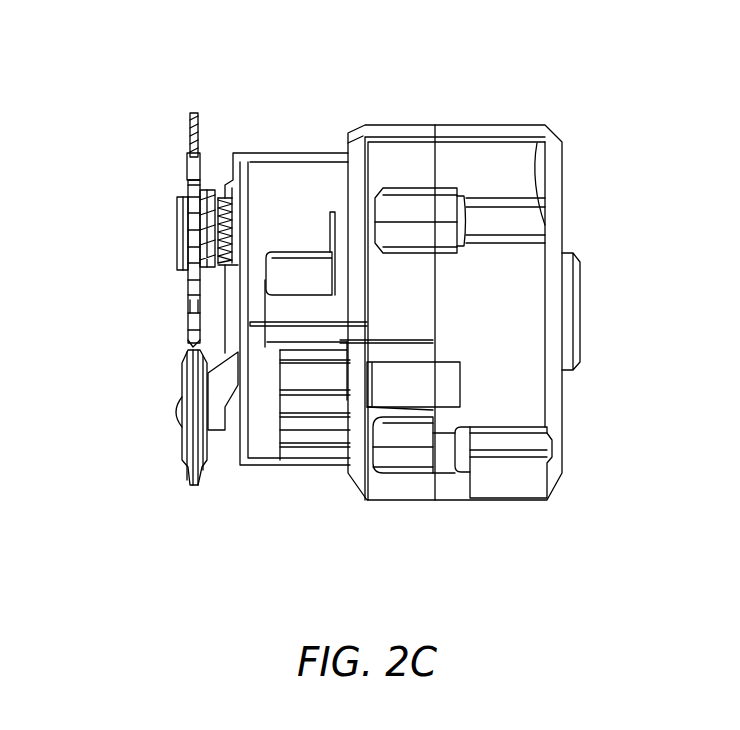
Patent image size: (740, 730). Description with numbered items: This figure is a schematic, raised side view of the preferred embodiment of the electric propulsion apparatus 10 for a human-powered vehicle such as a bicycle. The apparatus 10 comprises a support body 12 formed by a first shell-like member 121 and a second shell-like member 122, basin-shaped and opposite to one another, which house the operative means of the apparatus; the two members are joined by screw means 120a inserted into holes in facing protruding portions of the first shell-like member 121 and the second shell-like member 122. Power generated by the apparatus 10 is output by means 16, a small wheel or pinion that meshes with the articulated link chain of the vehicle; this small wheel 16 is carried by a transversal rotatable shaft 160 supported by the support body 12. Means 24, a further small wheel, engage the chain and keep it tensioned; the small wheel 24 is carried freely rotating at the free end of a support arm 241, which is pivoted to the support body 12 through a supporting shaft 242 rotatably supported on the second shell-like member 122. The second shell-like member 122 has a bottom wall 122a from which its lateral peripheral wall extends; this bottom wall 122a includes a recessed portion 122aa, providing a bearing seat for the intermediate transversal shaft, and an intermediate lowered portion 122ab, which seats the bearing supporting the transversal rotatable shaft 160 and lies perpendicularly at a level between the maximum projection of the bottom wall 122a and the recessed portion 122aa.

The electric propulsion apparatus 10 is at (405, 128).
The support body 12 is at (527, 128).
The means for outputting the power 16 is at (196, 114).
The means adapted to engage and keep the transmission means tensioned 24 is at (180, 373).
The screw means 120a is at (544, 246).
The first shell-like member 121 is at (470, 128).
The second shell-like member 122 is at (299, 182).
The bottom wall 122a is at (233, 190).
The recessed portion 122aa is at (357, 317).
The lowered portion 122ab is at (258, 272).
The transversal rotatable shaft 160 is at (237, 232).
The support arm 241 is at (218, 383).
The supporting shaft 242 is at (257, 320).